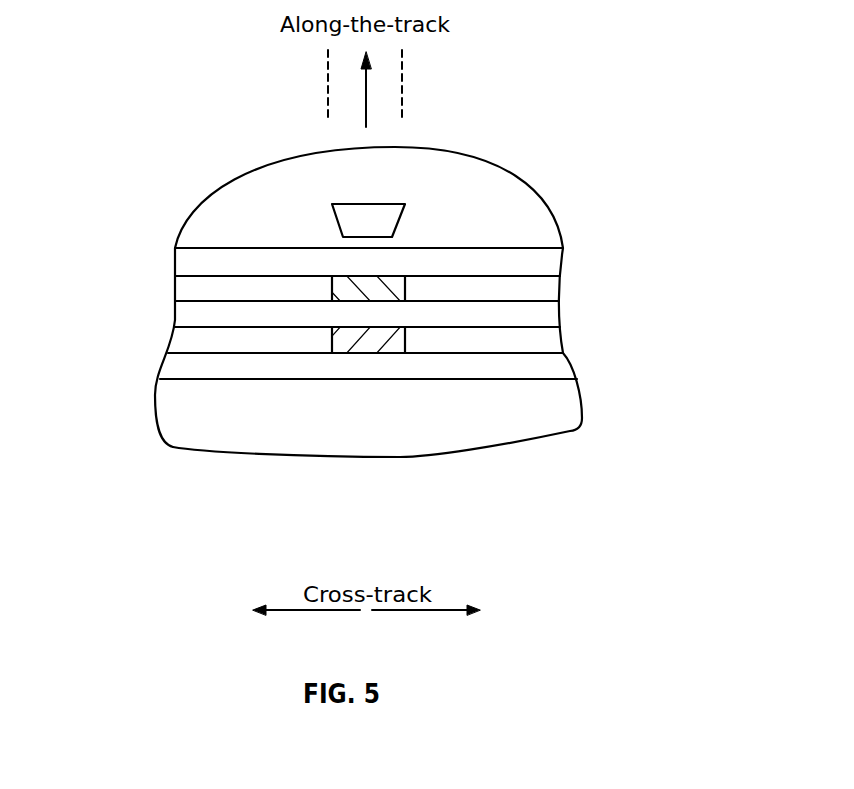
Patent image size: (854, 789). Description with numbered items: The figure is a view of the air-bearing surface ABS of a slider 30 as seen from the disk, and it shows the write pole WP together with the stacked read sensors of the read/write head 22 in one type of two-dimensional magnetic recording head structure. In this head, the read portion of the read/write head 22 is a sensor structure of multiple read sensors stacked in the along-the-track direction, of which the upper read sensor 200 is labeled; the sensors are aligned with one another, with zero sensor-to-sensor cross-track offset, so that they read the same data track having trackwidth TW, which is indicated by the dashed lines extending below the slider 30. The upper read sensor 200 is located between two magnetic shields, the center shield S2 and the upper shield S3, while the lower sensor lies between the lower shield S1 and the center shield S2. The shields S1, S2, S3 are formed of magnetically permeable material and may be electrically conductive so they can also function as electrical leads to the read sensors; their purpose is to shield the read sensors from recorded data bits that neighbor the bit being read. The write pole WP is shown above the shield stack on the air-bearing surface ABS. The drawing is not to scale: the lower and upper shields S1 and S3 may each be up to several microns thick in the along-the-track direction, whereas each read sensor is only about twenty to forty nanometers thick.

The upper read sensor 200 is at (347, 277).
The read/write head 22 is at (113, 205).
The slider 30 is at (168, 419).
The lower shield S1 is at (557, 360).
The center shield S2 is at (550, 312).
The upper shield S3 is at (548, 257).
The write pole WP is at (402, 223).
The air-bearing surface ABS is at (238, 186).
The trackwidth TW is at (332, 455).